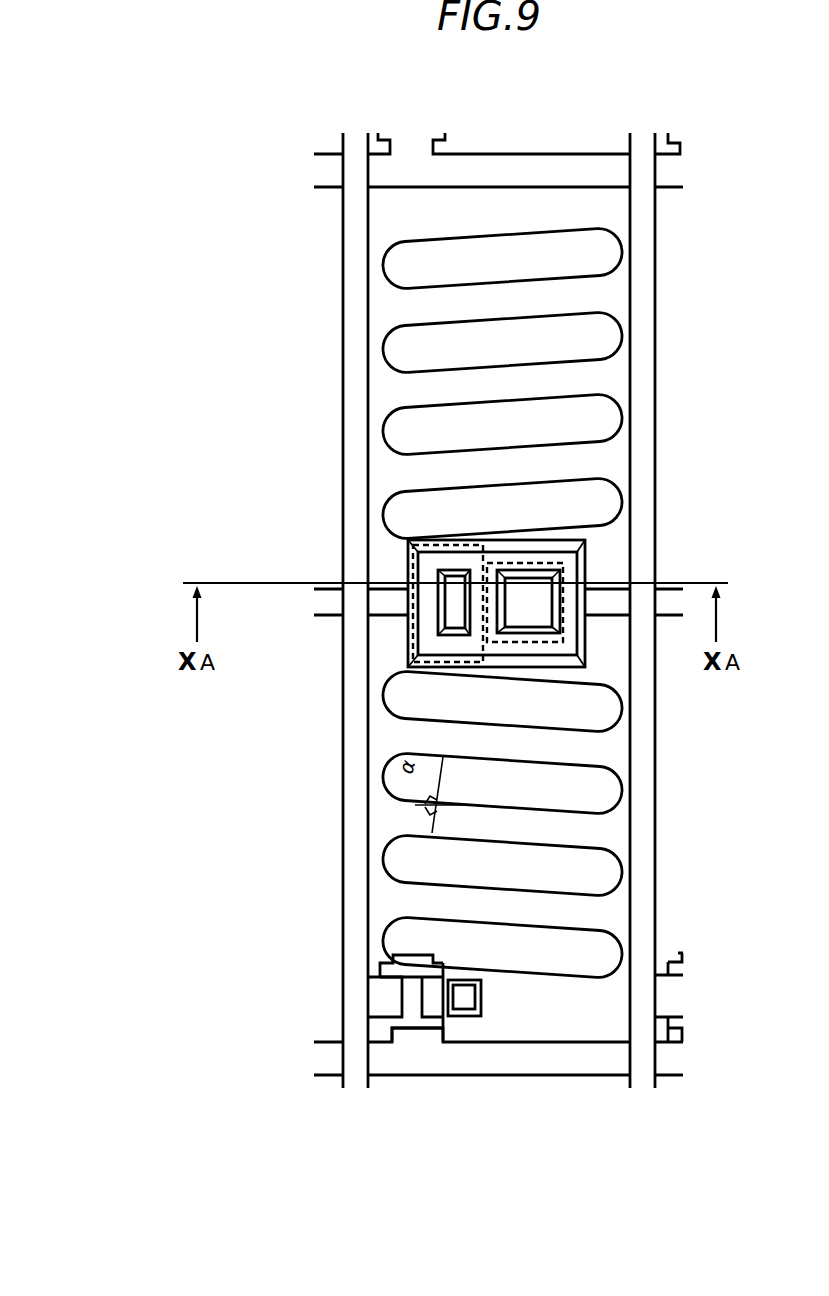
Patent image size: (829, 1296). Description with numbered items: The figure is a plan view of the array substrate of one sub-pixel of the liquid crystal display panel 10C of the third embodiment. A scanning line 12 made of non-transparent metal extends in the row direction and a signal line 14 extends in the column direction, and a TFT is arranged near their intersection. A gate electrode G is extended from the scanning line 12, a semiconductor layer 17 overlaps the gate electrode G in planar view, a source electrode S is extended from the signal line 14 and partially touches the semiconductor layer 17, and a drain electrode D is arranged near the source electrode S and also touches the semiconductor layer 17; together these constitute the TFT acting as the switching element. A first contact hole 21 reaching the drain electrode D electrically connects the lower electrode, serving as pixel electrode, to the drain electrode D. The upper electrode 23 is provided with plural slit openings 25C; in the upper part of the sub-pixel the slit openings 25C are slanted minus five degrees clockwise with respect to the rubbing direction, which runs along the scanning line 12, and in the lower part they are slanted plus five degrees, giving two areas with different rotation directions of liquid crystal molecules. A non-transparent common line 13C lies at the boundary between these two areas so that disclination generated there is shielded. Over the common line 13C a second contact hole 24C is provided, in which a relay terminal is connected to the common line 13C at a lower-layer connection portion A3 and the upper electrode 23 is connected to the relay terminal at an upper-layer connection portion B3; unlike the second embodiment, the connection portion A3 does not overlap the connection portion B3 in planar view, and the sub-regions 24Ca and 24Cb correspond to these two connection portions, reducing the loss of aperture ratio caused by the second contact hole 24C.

The liquid crystal display panel 10C is at (303, 119).
The connection portion B3 is at (525, 554).
The connection portion A3 is at (436, 531).
The second contact hole 24C is at (497, 467).
The first contact hole 24Ca is at (442, 592).
The second contact hole 24Cb is at (538, 594).
The common line 13C is at (328, 604).
The slit openings 25C is at (439, 603).
The upper electrode 23 is at (392, 742).
The signal line 14 is at (357, 808).
The source electrode S is at (392, 1002).
The semiconductor layer 17 is at (410, 1012).
The gate electrode G is at (420, 1033).
The drain electrode D is at (435, 1005).
The first contact hole 21 is at (488, 1069).
The scanning line 12 is at (580, 1055).
The element TFT is at (430, 1096).